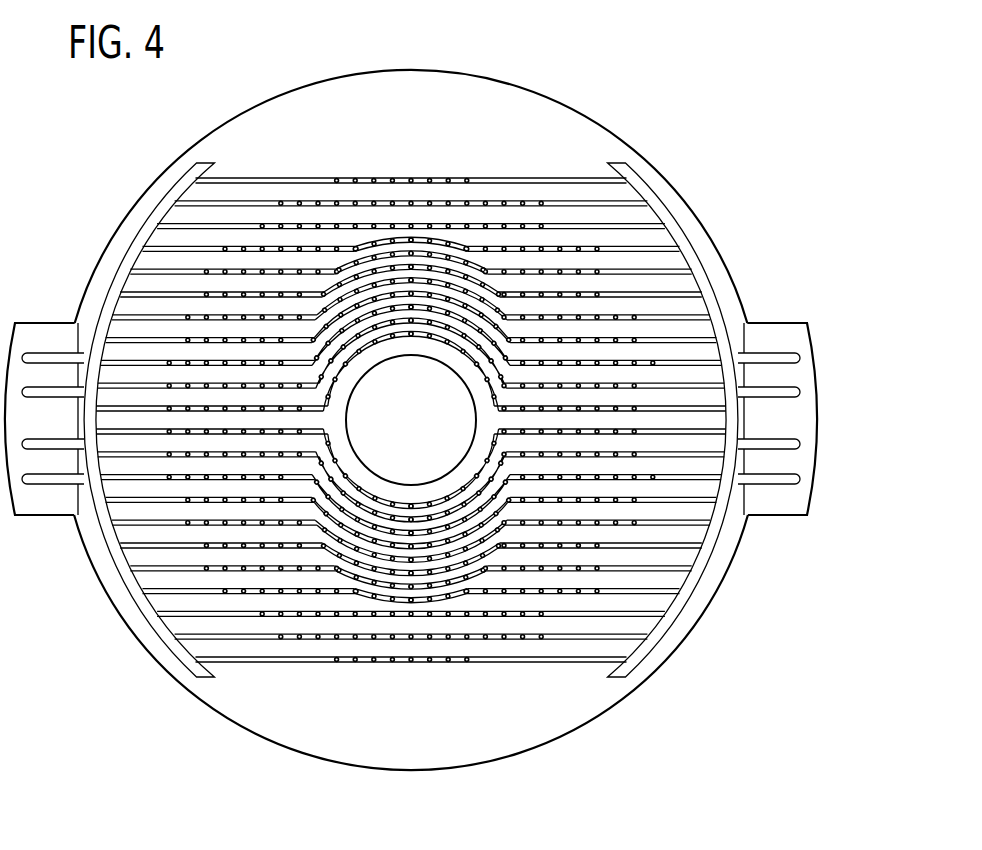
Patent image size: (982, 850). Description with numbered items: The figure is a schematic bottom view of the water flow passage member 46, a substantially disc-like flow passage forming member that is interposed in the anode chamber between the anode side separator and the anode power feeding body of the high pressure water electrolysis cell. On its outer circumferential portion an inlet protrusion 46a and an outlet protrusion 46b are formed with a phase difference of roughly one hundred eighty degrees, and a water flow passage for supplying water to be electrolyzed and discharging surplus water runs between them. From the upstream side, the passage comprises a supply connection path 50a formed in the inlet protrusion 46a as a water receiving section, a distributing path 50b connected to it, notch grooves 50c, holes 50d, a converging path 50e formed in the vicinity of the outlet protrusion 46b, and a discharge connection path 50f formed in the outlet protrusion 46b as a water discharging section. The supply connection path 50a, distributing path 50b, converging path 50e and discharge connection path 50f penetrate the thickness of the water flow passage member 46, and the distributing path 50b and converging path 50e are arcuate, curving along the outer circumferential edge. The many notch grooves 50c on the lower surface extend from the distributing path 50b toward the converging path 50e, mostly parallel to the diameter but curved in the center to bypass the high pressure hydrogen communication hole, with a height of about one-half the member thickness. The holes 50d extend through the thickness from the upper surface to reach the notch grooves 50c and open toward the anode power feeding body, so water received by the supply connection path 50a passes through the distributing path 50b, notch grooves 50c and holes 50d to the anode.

The water flow passage member 46 is at (700, 61).
The inlet protrusion 46a is at (48, 503).
The outlet protrusion 46b is at (772, 503).
The supply connection path 50a is at (67, 358).
The distributing path 50b is at (158, 212).
The notch grooves 50c is at (261, 226).
The holes 50d is at (410, 203).
The converging path 50e is at (662, 212).
The discharge connection path 50f is at (773, 393).